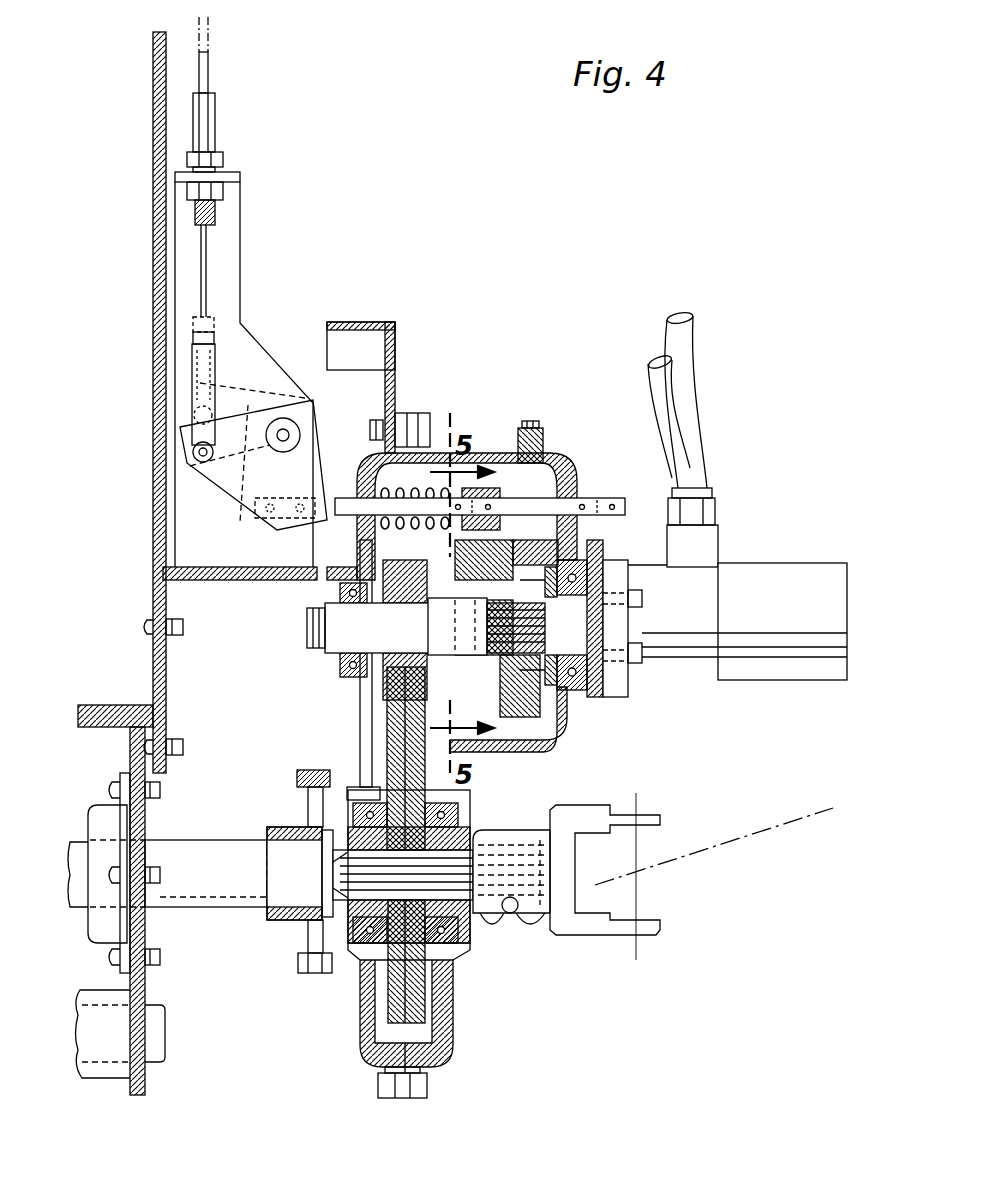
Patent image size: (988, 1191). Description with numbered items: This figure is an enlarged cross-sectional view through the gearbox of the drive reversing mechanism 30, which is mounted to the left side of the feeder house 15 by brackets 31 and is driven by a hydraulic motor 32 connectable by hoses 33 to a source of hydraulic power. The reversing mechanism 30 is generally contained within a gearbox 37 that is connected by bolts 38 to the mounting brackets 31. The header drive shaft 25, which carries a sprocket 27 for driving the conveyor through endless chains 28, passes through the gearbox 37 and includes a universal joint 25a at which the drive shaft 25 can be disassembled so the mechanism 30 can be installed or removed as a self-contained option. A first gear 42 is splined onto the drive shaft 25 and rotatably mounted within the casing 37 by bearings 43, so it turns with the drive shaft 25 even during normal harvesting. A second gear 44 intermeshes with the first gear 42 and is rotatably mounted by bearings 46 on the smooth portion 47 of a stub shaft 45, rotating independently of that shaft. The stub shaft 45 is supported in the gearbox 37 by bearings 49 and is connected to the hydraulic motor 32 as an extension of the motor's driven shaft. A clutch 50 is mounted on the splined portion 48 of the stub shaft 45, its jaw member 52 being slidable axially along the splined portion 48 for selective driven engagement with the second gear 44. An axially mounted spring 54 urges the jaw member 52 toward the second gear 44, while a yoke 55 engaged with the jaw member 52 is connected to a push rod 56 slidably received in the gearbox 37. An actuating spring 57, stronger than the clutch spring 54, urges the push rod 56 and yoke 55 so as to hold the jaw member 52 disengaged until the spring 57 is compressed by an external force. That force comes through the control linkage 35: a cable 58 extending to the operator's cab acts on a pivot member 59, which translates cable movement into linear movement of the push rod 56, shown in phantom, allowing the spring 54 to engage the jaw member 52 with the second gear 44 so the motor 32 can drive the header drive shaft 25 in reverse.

The feeder house 15 is at (152, 50).
The cable 58 is at (210, 78).
The control linkage 35 is at (288, 270).
The pivot member 59 is at (227, 478).
The mounting brackets 31 is at (366, 322).
The bolts 38 is at (418, 413).
The gearbox 37 is at (362, 468).
The push rod 56 is at (518, 500).
The yoke 55 is at (500, 528).
The actuating spring 57 is at (468, 497).
The drive reversing mechanism 30 is at (503, 308).
The second gear 44 is at (360, 697).
The bearings 46 is at (347, 700).
The bearings 49 is at (353, 665).
The stub shaft 45 is at (350, 640).
The smooth portion 47 is at (347, 682).
The clutch 50 is at (566, 749).
The splined portion 48 is at (633, 687).
The jaw member 52 is at (507, 717).
The spring 54 is at (545, 565).
The hydraulic motor 32 is at (767, 567).
The hoses 33 is at (702, 362).
The header drive shaft 25 is at (218, 848).
The bearings 43 is at (468, 930).
The first gear 42 is at (413, 992).
The sprocket 27 is at (307, 932).
The endless chains 28 is at (302, 965).
The universal joint 25a is at (597, 936).